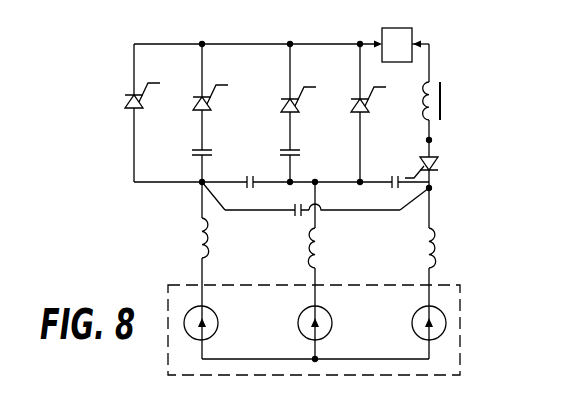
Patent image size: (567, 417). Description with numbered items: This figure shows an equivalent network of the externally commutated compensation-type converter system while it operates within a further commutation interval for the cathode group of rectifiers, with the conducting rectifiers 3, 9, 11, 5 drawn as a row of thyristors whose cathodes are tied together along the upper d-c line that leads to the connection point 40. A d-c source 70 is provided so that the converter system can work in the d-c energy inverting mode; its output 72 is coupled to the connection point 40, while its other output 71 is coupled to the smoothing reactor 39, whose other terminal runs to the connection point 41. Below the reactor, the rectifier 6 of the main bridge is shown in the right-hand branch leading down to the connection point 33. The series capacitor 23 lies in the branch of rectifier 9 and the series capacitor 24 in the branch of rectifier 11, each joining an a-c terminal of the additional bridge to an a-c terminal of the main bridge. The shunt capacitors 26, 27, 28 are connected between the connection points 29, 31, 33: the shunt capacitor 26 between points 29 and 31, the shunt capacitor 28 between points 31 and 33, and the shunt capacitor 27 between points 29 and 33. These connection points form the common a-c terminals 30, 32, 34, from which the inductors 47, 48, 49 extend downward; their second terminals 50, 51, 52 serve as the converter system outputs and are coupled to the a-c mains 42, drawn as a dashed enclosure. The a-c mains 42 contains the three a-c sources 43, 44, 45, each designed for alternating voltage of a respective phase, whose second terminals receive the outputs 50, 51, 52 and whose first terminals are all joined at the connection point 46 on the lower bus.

The rectifier 3 is at (126, 106).
The rectifier 9 is at (193, 107).
The rectifier 11 is at (281, 109).
The rectifier 5 is at (351, 109).
The rectifier 6 is at (440, 163).
The series capacitor 23 is at (192, 151).
The series capacitor 24 is at (300, 152).
The shunt capacitor 26 is at (249, 176).
The shunt capacitor 27 is at (294, 213).
The shunt capacitor 28 is at (391, 178).
The connection point 29 is at (200, 186).
The common a-c terminal 30 is at (200, 219).
The connection point 31 is at (352, 182).
The common a-c terminal 32 is at (321, 212).
The connection point 33 is at (432, 188).
The common a-c terminal 34 is at (418, 217).
The smoothing reactor 39 is at (433, 84).
The connection point 40 is at (372, 43).
The connection point 41 is at (432, 140).
The a-c mains 42 is at (465, 340).
The a-c source 43 is at (218, 318).
The a-c source 44 is at (332, 318).
The a-c source 45 is at (412, 318).
The connection point 46 is at (312, 357).
The inductor 47 is at (209, 238).
The inductor 48 is at (321, 251).
The inductor 49 is at (435, 248).
The second terminal of inductor 50 is at (205, 285).
The second terminal of inductor 51 is at (320, 287).
The second terminal of inductor 52 is at (431, 289).
The d-c source 70 is at (397, 45).
The output of d-c source 71 is at (419, 43).
The output of d-c source 72 is at (380, 40).